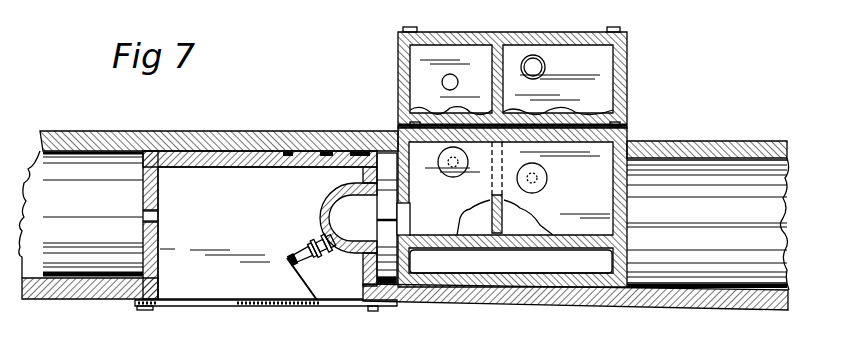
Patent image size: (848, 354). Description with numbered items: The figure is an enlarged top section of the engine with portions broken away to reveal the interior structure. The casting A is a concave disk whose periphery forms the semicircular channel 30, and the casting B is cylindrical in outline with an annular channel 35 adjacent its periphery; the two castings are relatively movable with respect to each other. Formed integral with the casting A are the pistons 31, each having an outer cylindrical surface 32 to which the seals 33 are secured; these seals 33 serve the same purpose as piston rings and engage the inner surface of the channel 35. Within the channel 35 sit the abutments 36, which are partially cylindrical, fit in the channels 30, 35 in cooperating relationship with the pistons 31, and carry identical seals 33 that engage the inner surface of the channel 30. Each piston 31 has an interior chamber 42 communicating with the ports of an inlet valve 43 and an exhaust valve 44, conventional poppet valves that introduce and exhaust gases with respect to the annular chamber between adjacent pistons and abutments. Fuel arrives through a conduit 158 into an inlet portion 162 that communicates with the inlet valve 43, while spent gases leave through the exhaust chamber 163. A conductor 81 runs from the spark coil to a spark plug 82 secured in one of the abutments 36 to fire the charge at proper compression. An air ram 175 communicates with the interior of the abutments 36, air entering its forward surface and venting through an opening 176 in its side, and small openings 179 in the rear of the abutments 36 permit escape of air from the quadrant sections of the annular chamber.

The semicircular periphery (channel) of casting A 30 is at (152, 131).
The piston 31 is at (628, 210).
The outer cylindrical surface of piston 32 is at (572, 284).
The seal 33 is at (337, 155).
The annular channel of casting B 35 is at (112, 285).
The abutment 36 is at (230, 167).
The interior chamber of piston 42 is at (622, 140).
The inlet valve 43 is at (547, 180).
The exhaust valve 44 is at (458, 178).
The conductor 81 is at (296, 278).
The spark plug 82 is at (300, 244).
The conduit 158 is at (534, 55).
The inlet portion 162 is at (597, 88).
The exhaust chamber 163 is at (452, 74).
The air ram 175 is at (296, 306).
The opening 176 is at (199, 306).
The small opening 179 is at (161, 214).
The casting A is at (718, 141).
The casting B is at (589, 305).